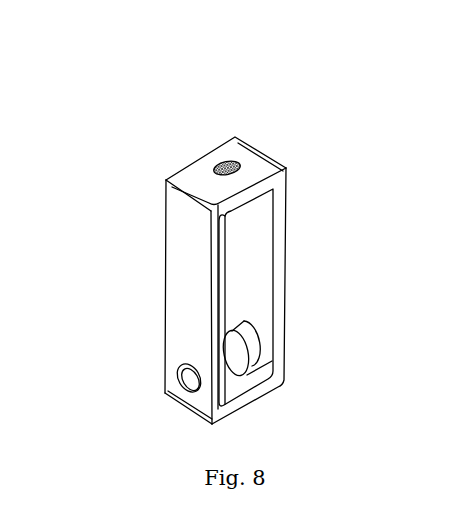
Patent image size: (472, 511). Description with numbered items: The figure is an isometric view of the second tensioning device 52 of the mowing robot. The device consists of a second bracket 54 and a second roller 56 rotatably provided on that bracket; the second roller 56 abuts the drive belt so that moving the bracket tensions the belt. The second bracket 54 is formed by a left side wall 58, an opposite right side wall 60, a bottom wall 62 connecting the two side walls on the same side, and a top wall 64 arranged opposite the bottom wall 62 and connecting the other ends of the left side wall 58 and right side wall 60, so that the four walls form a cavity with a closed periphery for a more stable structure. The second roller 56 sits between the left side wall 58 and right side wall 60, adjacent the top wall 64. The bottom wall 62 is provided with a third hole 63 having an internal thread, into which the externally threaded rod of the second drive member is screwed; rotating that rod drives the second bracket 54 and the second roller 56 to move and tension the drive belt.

The second tensioning device 52 is at (217, 47).
The second bracket 54 is at (277, 160).
The second roller 56 is at (257, 348).
The left side wall 58 is at (197, 263).
The right side wall 60 is at (280, 263).
The bottom wall 62 is at (205, 170).
The third hole 63 is at (230, 161).
The top wall 64 is at (253, 397).